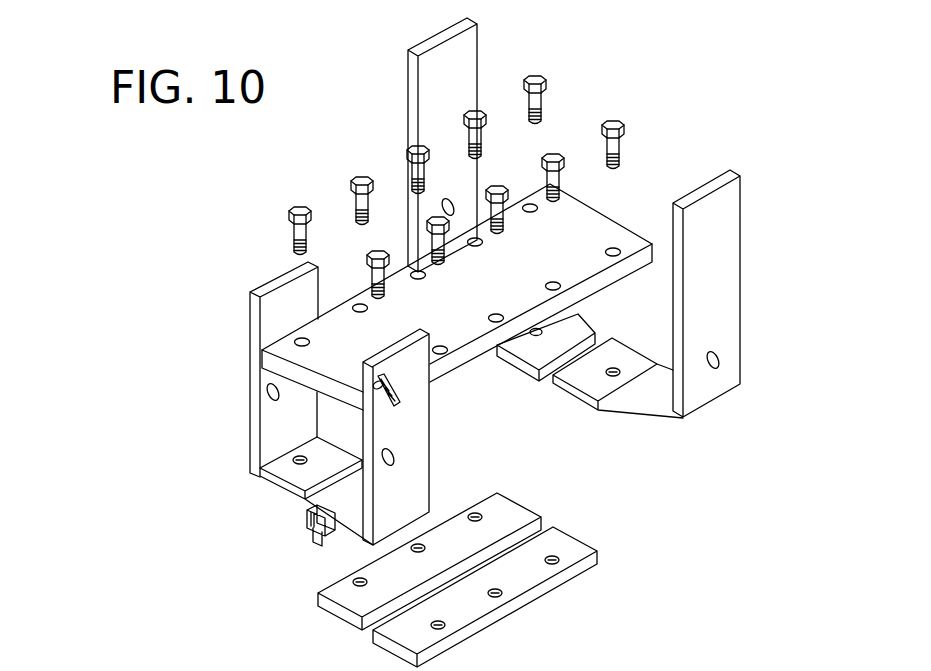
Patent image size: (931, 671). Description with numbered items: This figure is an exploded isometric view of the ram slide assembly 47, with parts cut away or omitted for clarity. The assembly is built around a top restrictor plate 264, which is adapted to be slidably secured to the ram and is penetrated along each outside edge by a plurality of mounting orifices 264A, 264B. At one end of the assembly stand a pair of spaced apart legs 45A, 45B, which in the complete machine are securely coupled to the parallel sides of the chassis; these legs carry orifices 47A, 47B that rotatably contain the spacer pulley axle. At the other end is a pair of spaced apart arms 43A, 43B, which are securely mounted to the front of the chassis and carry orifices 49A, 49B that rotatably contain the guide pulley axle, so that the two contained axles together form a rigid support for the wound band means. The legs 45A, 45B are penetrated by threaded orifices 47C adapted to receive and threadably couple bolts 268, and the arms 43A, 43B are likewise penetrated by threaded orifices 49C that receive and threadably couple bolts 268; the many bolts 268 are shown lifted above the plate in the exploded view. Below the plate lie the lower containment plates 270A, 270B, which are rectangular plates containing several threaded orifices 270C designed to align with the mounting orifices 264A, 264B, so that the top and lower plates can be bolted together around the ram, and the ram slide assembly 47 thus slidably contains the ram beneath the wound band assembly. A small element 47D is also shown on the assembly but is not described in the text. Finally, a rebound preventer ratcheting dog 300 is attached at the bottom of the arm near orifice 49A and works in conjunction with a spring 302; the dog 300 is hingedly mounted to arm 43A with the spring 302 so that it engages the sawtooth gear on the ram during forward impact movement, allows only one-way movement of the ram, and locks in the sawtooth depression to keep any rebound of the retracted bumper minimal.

The ram slide assembly 47 is at (200, 222).
The top restrictor plate 264 is at (603, 230).
The mounting orifices 264A is at (622, 250).
The mounting orifices 264B is at (536, 205).
The bolts 268 is at (547, 100).
The leg 45A is at (723, 298).
The leg 45B is at (413, 98).
The orifice 47A is at (720, 366).
The orifice 47B is at (453, 205).
The threaded orifices 47C is at (613, 370).
The spacer block 47D is at (538, 330).
The arm 43A is at (418, 475).
The arm 43B is at (253, 413).
The orifice 49A is at (395, 460).
The orifice 49B is at (280, 397).
The threaded orifices 49C is at (295, 455).
The rebound preventer ratcheting dog 300 is at (246, 545).
The spring 302 is at (312, 523).
The lower containment plate 270A is at (560, 545).
The lower containment plate 270B is at (517, 505).
The threaded orifices 270C is at (553, 560).